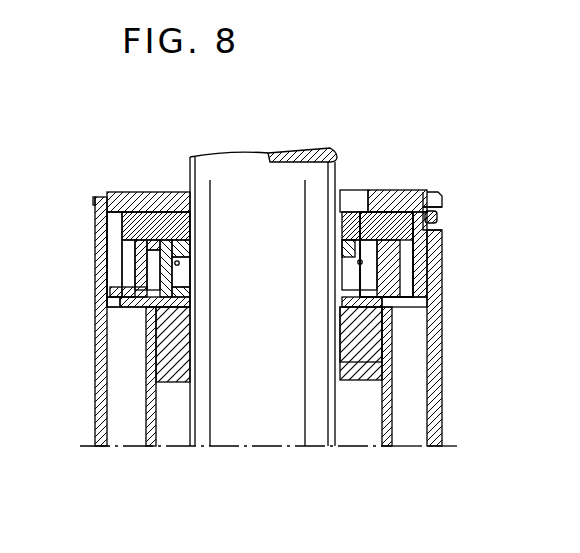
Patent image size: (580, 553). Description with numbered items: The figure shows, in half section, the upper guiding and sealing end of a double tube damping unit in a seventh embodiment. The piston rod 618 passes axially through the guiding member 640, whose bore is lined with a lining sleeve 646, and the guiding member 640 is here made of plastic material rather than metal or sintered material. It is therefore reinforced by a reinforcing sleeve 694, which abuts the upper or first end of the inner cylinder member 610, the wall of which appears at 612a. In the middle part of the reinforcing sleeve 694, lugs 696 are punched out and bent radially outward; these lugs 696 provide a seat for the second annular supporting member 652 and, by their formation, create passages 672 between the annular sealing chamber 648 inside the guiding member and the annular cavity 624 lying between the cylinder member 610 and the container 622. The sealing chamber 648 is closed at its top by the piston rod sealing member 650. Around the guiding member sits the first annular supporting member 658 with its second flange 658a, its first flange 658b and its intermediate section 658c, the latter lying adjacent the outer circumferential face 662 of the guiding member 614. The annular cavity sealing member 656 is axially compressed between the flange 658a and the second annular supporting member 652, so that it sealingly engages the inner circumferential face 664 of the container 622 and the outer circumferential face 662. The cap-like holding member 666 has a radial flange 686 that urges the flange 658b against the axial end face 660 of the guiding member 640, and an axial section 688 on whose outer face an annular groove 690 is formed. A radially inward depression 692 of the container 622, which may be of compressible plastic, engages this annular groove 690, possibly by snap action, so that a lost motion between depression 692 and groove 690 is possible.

The cylinder member 610 is at (150, 438).
The cylinder wall 612a is at (362, 428).
The guiding member 614 is at (362, 382).
The piston rod 618 is at (270, 430).
The container 622 is at (442, 410).
The annular cavity 624 is at (420, 430).
The guiding member 640 is at (392, 337).
The lining sleeve 646 is at (342, 362).
The annular sealing chamber 648 is at (182, 287).
The piston rod sealing member 650 is at (352, 187).
The second annular supporting member 652 is at (132, 292).
The annular cavity sealing member 656 is at (115, 272).
The first annular supporting member 658 is at (97, 202).
The second flange 658a is at (430, 260).
The first flange 658b is at (395, 212).
The intermediate section 658c is at (440, 239).
The axial end face 660 is at (148, 200).
The outer circumferential face 662 is at (377, 278).
The inner circumferential face 664 is at (112, 438).
The holding member 666 is at (135, 200).
The passages 672 is at (153, 308).
The radial flange 686 is at (378, 190).
The axial section 688 is at (117, 252).
The annular groove 690 is at (445, 196).
The depression 692 is at (440, 216).
The reinforcing sleeve 694 is at (150, 343).
The lugs 696 is at (143, 297).